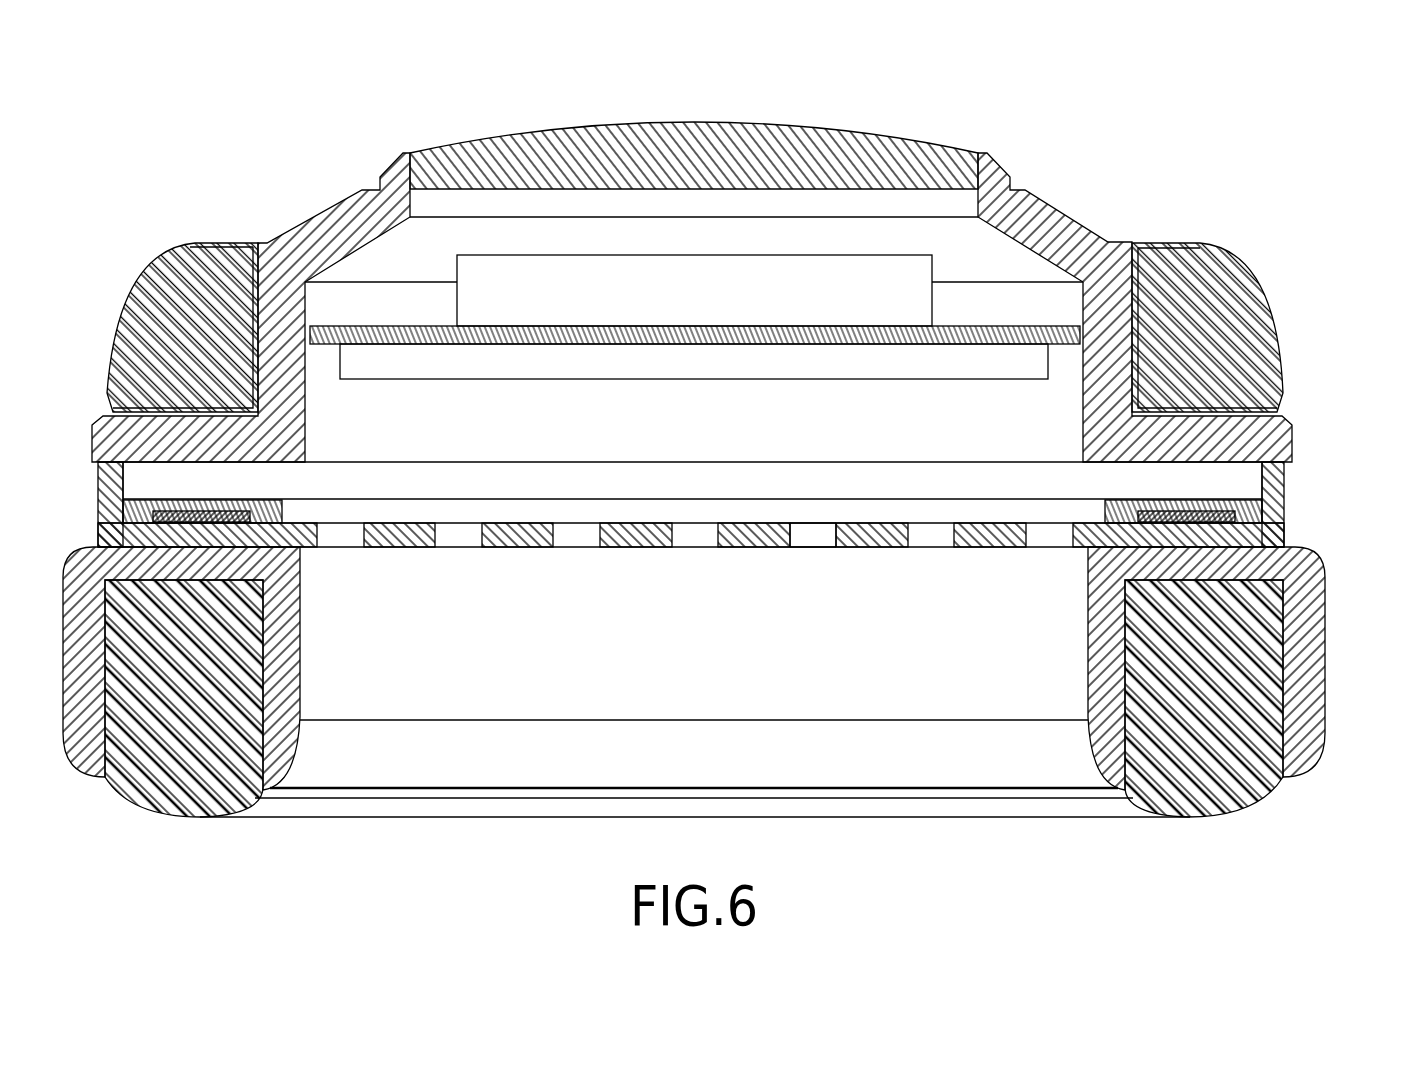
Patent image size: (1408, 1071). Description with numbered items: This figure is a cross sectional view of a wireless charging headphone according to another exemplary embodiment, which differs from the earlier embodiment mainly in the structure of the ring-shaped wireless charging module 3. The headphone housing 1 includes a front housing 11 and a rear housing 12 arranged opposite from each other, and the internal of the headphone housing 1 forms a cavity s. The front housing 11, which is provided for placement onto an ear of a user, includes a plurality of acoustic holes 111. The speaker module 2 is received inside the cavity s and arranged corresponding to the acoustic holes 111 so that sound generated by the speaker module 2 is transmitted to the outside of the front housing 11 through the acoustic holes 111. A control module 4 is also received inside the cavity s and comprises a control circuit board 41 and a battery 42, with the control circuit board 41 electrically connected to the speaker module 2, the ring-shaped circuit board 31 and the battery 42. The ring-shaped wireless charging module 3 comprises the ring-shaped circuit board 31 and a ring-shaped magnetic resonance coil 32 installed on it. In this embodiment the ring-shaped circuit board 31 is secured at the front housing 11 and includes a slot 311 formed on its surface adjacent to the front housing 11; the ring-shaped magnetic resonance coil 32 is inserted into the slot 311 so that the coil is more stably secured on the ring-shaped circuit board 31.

The headphone housing 1 is at (703, 73).
The rear housing 12 is at (555, 140).
The control module 4 is at (695, 198).
The control circuit board 41 is at (962, 323).
The battery 42 is at (877, 268).
The speaker module 2 is at (851, 372).
The cavity s is at (1062, 403).
The ring-shaped wireless charging module 3 is at (742, 507).
The ring-shaped circuit board 31 is at (1266, 462).
The ring-shaped magnetic resonance coil 32 is at (1258, 505).
The slot 311 is at (760, 546).
The front housing 11 is at (877, 538).
The acoustic holes 111 is at (815, 537).